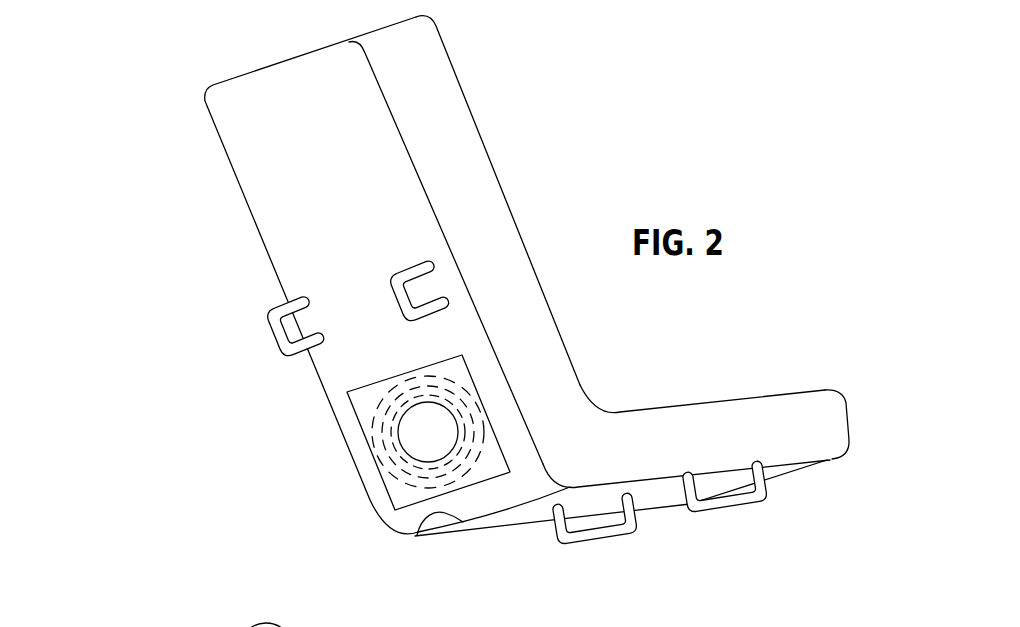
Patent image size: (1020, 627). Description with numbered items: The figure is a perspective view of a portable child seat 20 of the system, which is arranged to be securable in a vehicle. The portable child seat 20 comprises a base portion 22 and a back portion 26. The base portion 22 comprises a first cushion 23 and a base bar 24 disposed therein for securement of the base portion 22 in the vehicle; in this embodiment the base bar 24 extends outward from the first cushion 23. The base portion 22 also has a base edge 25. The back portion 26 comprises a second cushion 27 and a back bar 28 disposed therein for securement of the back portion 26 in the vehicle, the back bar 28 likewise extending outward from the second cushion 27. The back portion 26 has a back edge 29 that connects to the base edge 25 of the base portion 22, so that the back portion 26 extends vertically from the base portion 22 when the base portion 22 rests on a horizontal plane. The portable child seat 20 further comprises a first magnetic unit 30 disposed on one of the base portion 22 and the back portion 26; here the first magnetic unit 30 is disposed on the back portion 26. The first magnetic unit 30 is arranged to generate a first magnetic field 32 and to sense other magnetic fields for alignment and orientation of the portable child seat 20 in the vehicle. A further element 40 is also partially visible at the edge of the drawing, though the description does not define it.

The portable child seat 20 is at (176, 72).
The base portion 22 is at (780, 390).
The first cushion 23 is at (807, 418).
The base bar 24 is at (602, 539).
The base edge 25 is at (512, 507).
The back portion 26 is at (453, 75).
The second cushion 27 is at (433, 113).
The back bar 28 is at (274, 330).
The back edge 29 is at (413, 533).
The first magnetic unit 30 is at (383, 378).
The first magnetic field 32 is at (398, 453).
The adjacent component 40 is at (82, 626).